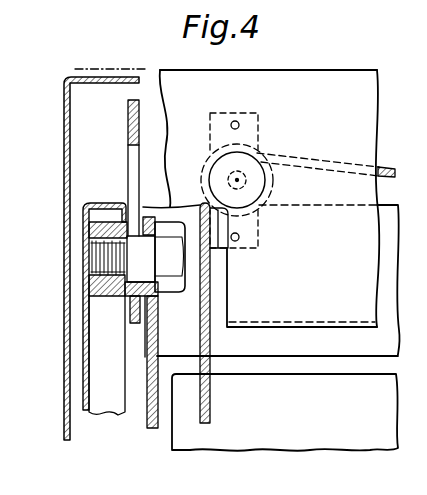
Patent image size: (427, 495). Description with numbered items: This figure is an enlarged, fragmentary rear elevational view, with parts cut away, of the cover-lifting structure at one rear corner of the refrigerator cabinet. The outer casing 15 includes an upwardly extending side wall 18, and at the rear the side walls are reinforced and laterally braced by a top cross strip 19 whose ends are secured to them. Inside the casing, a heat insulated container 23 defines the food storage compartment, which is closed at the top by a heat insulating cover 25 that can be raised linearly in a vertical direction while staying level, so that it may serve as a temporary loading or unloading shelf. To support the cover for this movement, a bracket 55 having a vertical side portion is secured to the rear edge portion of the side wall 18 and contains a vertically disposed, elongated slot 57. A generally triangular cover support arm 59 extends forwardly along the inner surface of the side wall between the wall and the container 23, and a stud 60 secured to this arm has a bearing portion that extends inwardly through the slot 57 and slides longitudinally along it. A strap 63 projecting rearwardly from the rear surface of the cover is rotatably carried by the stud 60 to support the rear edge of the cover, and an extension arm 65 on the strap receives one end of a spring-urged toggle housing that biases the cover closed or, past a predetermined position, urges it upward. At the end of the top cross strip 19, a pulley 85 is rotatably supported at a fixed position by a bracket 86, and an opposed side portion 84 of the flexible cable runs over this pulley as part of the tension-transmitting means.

The outer casing 15 is at (66, 168).
The side wall 18 is at (66, 374).
The top cross strip 19 is at (337, 70).
The heat insulated container 23 is at (172, 440).
The heat insulating cover 25 is at (387, 215).
The bracket 55 is at (128, 122).
The slot 57 is at (128, 170).
The cover support arm 59 is at (100, 378).
The stud 60 is at (164, 248).
The strap 63 is at (150, 216).
The extension arm 65 is at (148, 403).
The side portion of cable 84 is at (203, 318).
The pulley 85 is at (226, 252).
The bracket 86 is at (247, 128).